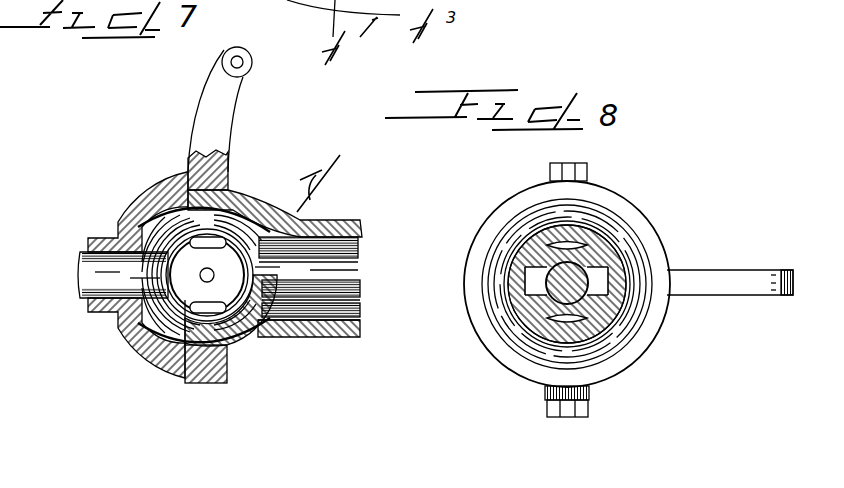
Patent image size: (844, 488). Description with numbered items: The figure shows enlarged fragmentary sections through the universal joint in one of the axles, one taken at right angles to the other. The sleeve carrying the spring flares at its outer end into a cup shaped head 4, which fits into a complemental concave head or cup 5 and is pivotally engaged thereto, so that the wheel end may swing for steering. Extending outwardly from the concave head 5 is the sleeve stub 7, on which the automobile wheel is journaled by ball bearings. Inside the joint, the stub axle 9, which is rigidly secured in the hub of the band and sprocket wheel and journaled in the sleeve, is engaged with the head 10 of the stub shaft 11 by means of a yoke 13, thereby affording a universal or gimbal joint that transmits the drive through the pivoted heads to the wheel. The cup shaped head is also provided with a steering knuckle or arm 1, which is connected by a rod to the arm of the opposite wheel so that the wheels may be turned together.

In FIG. 7, the steering knuckle or arm 1 is at (218, 105).
In FIG. 8, the steering knuckle or arm 1 is at (712, 286).
In FIG. 7, the cup shaped head 4 is at (247, 347).
In FIG. 8, the cup shaped head 4 is at (500, 260).
In FIG. 7, the concave head or cup 5 is at (170, 372).
In FIG. 8, the concave head or cup 5 is at (497, 223).
In FIG. 7, the sleeve stub 7 is at (103, 303).
In FIG. 7, the stub axle 9 is at (310, 277).
In FIG. 8, the stub axle 9 is at (540, 307).
In FIG. 7, the head of the stub shaft 10 is at (207, 281).
In FIG. 7, the stub shaft 11 is at (103, 270).
In FIG. 7, the yoke 13 is at (233, 237).
In FIG. 8, the yoke 13 is at (537, 277).